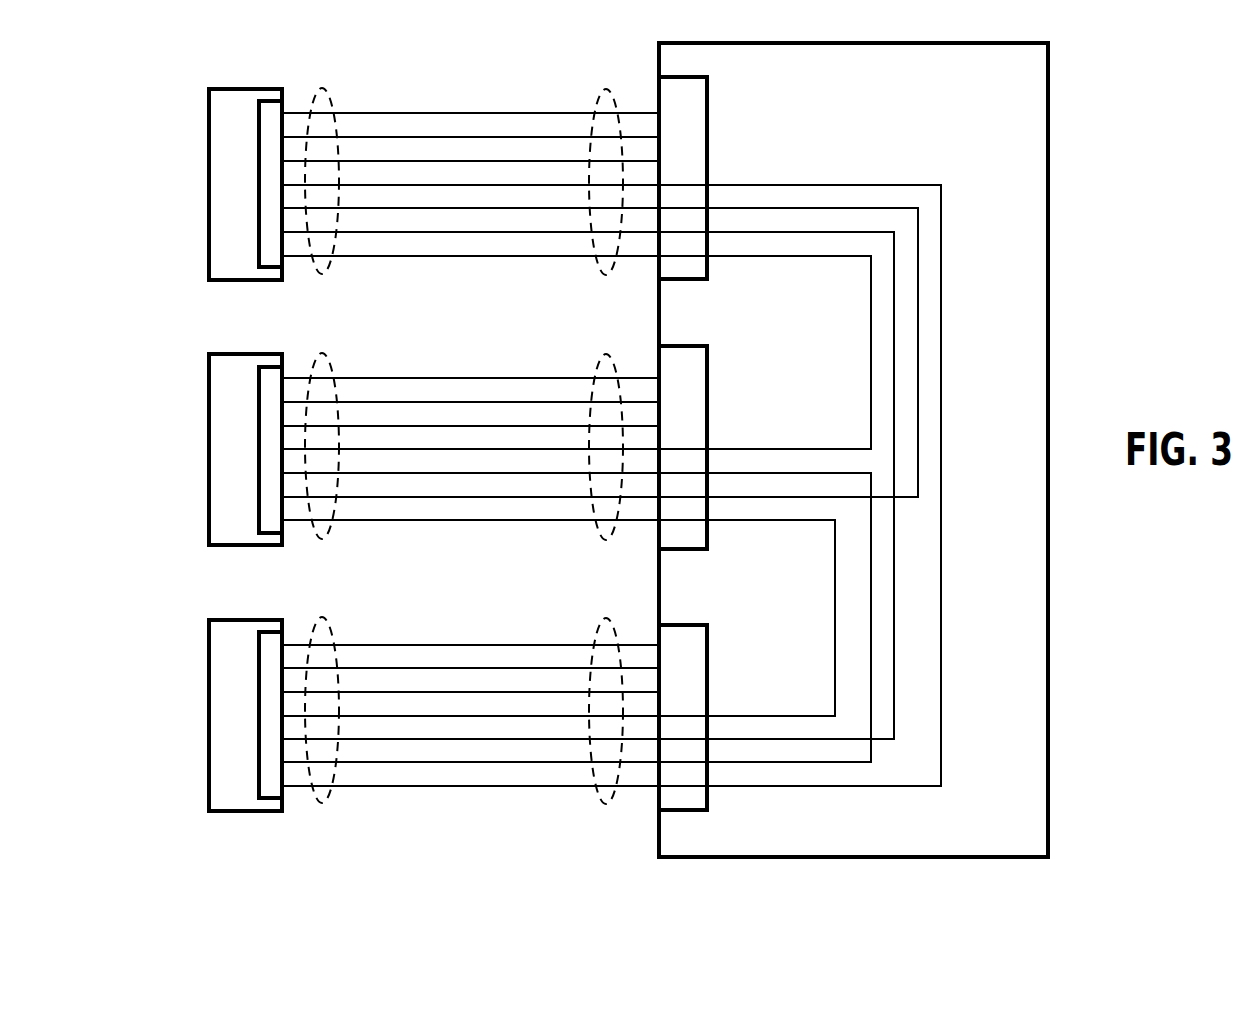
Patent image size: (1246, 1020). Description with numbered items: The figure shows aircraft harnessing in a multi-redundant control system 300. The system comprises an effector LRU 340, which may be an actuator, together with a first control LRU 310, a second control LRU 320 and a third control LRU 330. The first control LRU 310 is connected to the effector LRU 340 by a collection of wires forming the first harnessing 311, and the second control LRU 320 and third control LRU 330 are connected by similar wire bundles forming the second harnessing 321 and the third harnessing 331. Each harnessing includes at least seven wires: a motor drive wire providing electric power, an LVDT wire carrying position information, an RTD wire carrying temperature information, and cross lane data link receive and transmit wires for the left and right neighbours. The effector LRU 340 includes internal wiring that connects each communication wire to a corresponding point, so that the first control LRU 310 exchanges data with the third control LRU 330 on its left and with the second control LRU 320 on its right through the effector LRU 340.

The multi-redundant control system 300 is at (457, 42).
The first control LRU 310 is at (205, 158).
The first harnessing 311 is at (372, 257).
The second control LRU 320 is at (195, 403).
The second harnessing 321 is at (372, 522).
The third control LRU 330 is at (200, 678).
The third harnessing 331 is at (372, 788).
The effector LRU 340 is at (1057, 667).